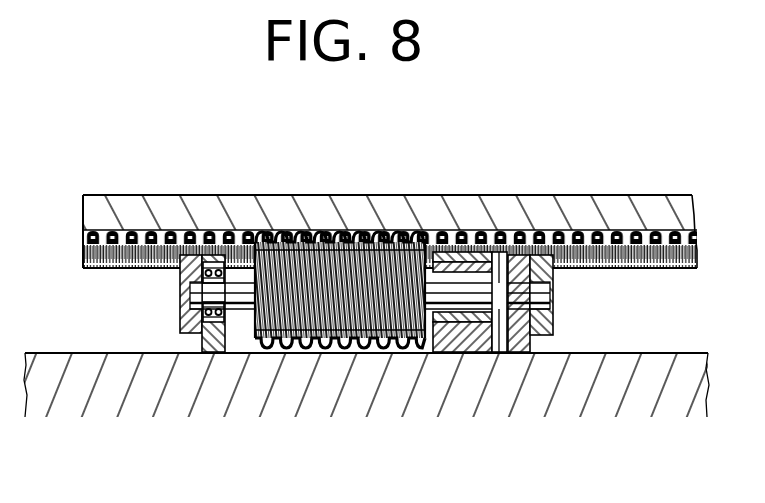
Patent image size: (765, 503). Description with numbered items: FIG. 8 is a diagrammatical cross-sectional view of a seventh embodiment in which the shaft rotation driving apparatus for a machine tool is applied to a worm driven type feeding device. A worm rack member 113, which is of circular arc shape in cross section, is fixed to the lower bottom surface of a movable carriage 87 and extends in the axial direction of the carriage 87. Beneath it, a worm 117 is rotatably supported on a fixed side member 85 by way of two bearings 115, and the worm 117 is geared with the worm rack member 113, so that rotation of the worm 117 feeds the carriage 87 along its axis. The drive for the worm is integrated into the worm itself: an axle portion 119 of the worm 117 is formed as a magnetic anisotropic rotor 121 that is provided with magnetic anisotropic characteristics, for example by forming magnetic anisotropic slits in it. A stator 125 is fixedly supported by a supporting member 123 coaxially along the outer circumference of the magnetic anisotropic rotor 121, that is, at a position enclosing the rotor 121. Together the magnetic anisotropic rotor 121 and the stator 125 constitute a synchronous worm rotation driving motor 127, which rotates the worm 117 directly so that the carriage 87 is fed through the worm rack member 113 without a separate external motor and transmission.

The fixed side member 85 is at (676, 360).
The movable carriage 87 is at (247, 197).
The worm rack member 113 is at (123, 263).
The bearings 115 is at (208, 352).
The worm 117 is at (385, 350).
The axle portion 119 is at (506, 352).
The magnetic anisotropic rotor 121 is at (452, 283).
The supporting member 123 is at (437, 252).
The stator 125 is at (447, 352).
The synchronous worm rotation driving motor 127 is at (500, 246).